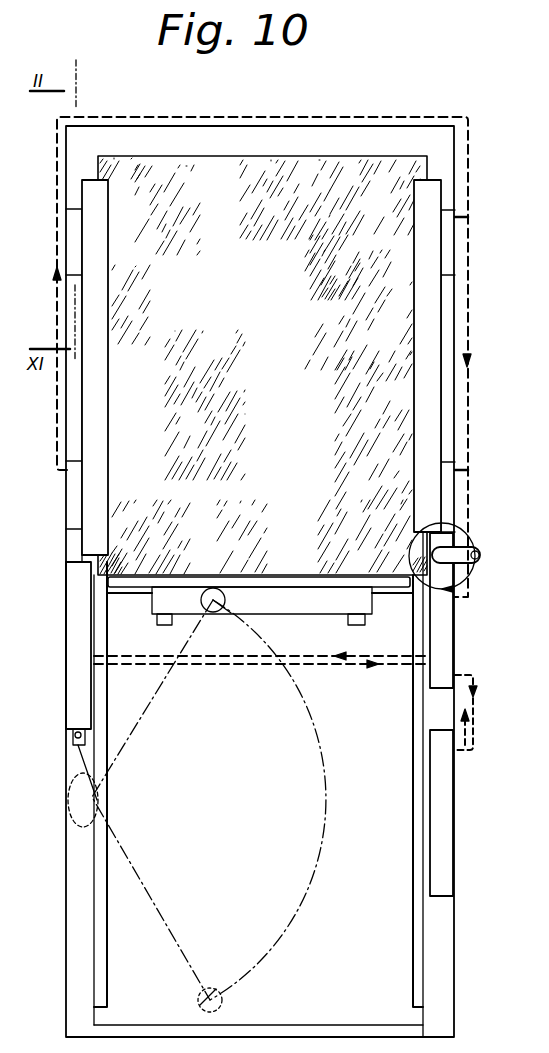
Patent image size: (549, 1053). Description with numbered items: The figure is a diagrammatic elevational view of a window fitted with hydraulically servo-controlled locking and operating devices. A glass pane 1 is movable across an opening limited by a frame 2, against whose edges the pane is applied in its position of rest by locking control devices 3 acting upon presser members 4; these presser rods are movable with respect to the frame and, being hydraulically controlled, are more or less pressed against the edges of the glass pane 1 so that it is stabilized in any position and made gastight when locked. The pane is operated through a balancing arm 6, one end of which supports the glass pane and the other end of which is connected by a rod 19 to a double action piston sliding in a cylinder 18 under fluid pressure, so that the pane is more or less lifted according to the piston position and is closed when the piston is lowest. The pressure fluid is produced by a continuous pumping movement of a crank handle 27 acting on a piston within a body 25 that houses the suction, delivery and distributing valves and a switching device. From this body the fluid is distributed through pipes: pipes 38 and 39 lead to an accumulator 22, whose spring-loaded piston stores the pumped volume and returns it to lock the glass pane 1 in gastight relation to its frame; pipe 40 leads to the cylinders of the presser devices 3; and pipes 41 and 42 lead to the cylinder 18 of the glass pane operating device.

The glass pane 1 is at (270, 177).
The frame 2 is at (78, 150).
The locking control devices 3 is at (72, 242).
The presser members 4 is at (93, 328).
The balancing arm 6 is at (155, 897).
The cylinder 18 is at (80, 704).
The rod 19 is at (78, 755).
The accumulator 22 is at (440, 820).
The body 25 is at (448, 632).
The crank handle 27 is at (452, 551).
The pipe 38 is at (473, 680).
The pipe 39 is at (478, 722).
The pipe 40 is at (384, 118).
The pipe 41 is at (292, 654).
The pipe 42 is at (365, 666).